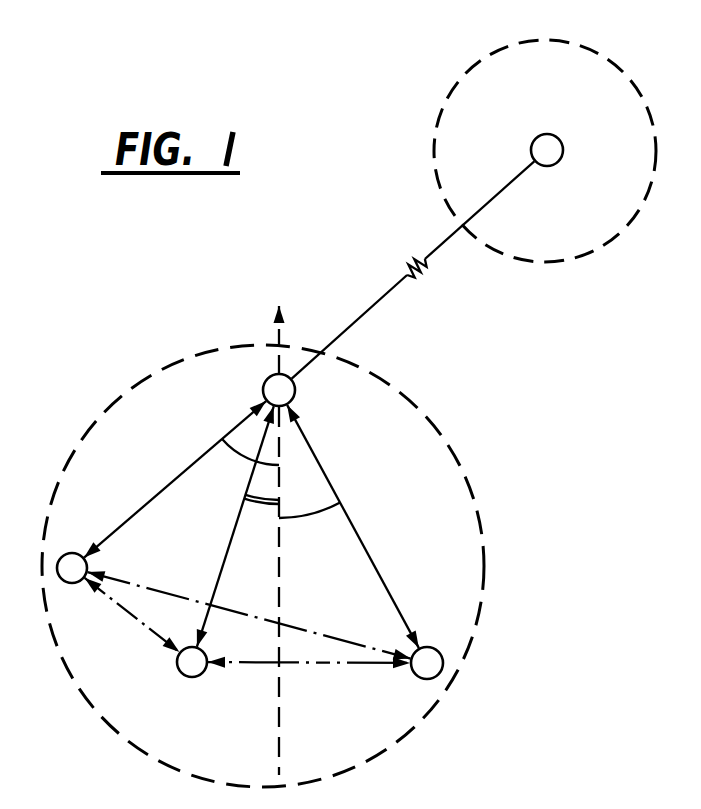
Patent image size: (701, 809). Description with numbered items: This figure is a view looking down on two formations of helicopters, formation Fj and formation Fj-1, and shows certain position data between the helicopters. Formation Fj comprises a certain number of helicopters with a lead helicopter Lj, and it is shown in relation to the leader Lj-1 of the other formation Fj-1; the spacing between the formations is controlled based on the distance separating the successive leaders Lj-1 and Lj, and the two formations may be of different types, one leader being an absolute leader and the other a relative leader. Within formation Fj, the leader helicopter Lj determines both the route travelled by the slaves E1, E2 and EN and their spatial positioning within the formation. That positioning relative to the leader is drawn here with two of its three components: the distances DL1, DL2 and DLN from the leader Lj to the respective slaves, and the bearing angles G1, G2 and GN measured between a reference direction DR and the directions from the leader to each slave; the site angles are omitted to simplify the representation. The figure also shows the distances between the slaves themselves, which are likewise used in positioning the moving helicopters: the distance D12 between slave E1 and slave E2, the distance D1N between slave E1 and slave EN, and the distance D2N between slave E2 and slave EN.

The lead helicopter Lj is at (304, 387).
The leader of formation Fj-1 Lj-1 is at (578, 144).
The formation Fj is at (483, 558).
The formation Fj-1 is at (568, 262).
The reference direction DR is at (300, 333).
The slave helicopter E1 is at (69, 556).
The slave helicopter E2 is at (186, 679).
The slave helicopter EN is at (435, 649).
The distance between leader and slave DL1 is at (175, 479).
The distance between leader and slave DL2 is at (229, 526).
The distance between leader and slave DLN is at (353, 526).
The bearing angle G1 is at (242, 461).
The bearing angle G2 is at (261, 518).
The bearing angle GN is at (323, 515).
The distance between slaves D12 is at (132, 615).
The distance between slaves D1N is at (249, 615).
The distance between slaves D2N is at (309, 683).